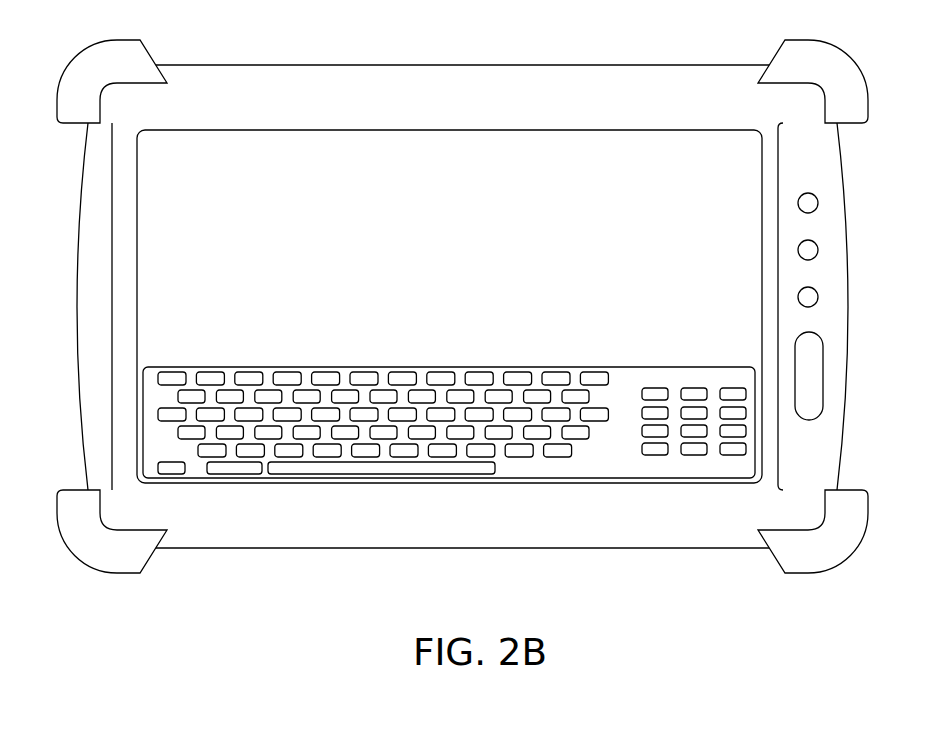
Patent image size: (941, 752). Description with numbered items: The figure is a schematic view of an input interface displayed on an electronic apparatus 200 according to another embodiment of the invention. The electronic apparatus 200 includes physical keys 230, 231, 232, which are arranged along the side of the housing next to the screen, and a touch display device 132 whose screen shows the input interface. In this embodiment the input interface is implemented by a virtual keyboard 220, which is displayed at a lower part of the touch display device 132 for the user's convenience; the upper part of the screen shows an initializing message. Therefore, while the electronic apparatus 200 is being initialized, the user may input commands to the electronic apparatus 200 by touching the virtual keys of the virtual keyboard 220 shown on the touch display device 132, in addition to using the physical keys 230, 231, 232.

The electronic apparatus 200 is at (918, 572).
The touch display device 132 is at (410, 130).
The virtual keyboard 220 is at (605, 478).
The physical key 230 is at (818, 203).
The physical key 231 is at (818, 250).
The physical key 232 is at (818, 297).